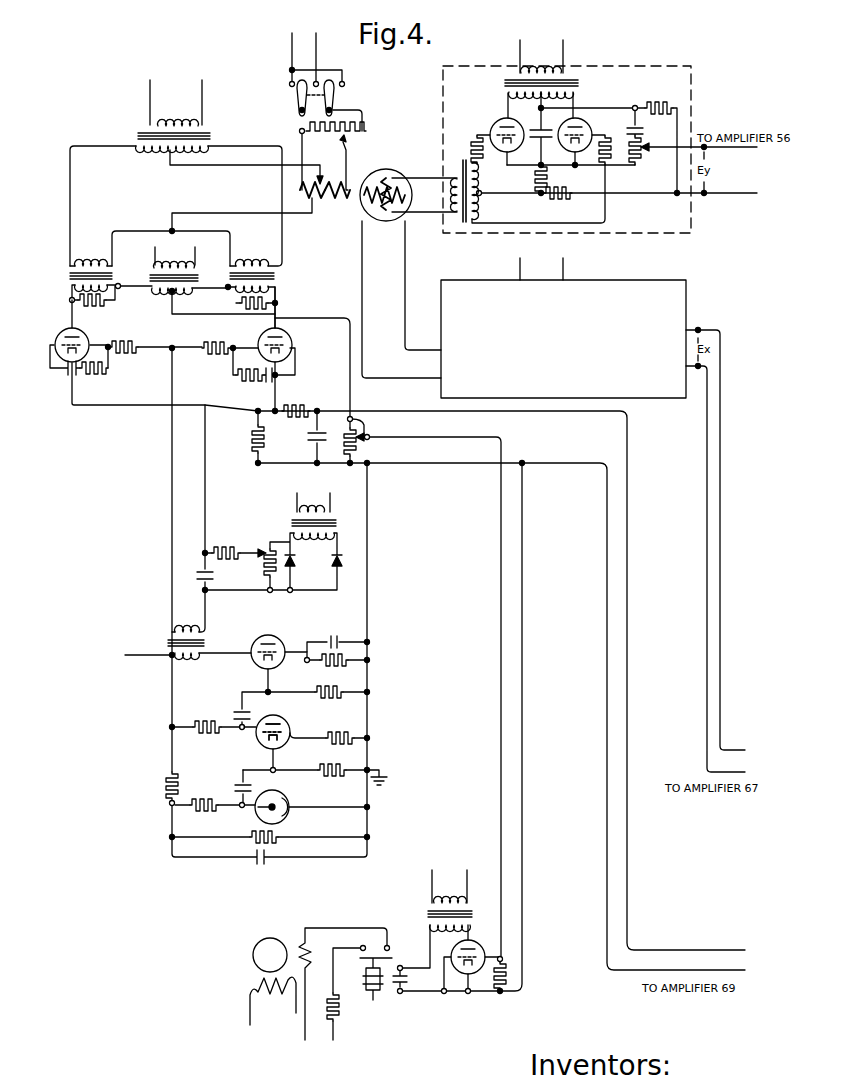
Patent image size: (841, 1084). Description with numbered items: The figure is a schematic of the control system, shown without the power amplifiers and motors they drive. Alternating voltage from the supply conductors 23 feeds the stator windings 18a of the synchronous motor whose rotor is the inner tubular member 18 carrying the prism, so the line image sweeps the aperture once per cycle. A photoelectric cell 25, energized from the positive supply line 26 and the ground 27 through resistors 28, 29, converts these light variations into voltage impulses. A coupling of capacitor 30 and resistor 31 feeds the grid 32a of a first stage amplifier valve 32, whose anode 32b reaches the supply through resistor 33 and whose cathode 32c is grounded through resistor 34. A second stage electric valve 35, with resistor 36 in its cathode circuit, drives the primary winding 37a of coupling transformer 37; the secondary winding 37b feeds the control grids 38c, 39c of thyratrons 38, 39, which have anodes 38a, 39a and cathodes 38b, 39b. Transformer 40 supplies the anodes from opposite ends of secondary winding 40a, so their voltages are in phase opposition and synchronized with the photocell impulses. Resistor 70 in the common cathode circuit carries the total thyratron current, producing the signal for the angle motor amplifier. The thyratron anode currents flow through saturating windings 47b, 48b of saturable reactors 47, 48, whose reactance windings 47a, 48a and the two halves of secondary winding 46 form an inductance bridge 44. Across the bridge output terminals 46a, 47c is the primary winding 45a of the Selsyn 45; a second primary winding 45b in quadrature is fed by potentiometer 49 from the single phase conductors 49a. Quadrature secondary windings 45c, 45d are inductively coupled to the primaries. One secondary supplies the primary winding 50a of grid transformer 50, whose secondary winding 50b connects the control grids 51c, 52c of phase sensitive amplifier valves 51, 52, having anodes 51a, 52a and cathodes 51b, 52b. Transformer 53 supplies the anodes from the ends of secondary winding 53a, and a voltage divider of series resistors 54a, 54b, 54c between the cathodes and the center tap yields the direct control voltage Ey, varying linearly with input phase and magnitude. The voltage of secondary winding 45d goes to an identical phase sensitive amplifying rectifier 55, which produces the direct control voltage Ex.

The inner tubular member 18 is at (282, 943).
The stator windings 18a is at (304, 966).
The supply conductors 23 is at (356, 156).
The photoelectric cell 25 is at (290, 817).
The positive supply line 26 is at (144, 654).
The ground 27 is at (382, 774).
The resistor 28 is at (166, 784).
The resistor 29 is at (211, 815).
The capacitor 30 is at (234, 785).
The resistor 31 is at (328, 776).
The first stage amplifier valve 32 is at (262, 744).
The grid 32a is at (294, 720).
The anode 32b is at (261, 716).
The cathode 32c is at (291, 732).
The resistor 33 is at (202, 723).
The resistor 34 is at (344, 734).
The electric valve 35 is at (258, 667).
The resistor 36 is at (332, 667).
The coupling transformer 37 is at (206, 643).
The primary winding 37a is at (186, 658).
The secondary winding 37b is at (184, 630).
The electric valve 38 is at (62, 332).
The anode 38a is at (79, 332).
The cathode 38b is at (108, 354).
The control grid 38c is at (50, 364).
The electric valve 39 is at (294, 336).
The anode 39a is at (272, 332).
The cathode 39b is at (230, 351).
The control grid 39c is at (298, 370).
The transformer 40 is at (192, 283).
The secondary winding 40a is at (180, 298).
The inductance bridge 44 is at (194, 197).
The Selsyn 45 is at (384, 165).
The primary winding 45a is at (306, 198).
The second primary winding 45b is at (342, 200).
The secondary winding 45c is at (404, 186).
The secondary winding 45d is at (382, 219).
The secondary winding 46 is at (135, 142).
The output terminal 46a is at (170, 156).
The saturable reactor 47 is at (108, 270).
The reactance winding 47a is at (92, 262).
The saturating winding 47b is at (72, 287).
The output terminal 47c is at (172, 230).
The saturable reactor 48 is at (278, 280).
The reactance winding 48a is at (256, 264).
The saturating winding 48b is at (275, 303).
The potentiometer 49 is at (358, 126).
The conductors 49a is at (316, 52).
The grid transformer 50 is at (458, 176).
The primary winding 50a is at (448, 216).
The secondary winding 50b is at (481, 212).
The electric valve 51 is at (498, 120).
The anode 51a is at (508, 109).
The cathode 51b is at (505, 157).
The control grid 51c is at (476, 132).
The electric valve 52 is at (586, 130).
The anode 52a is at (572, 122).
The cathode 52b is at (578, 164).
The control grid 52c is at (592, 135).
The transformer 53 is at (508, 82).
The secondary winding 53a is at (576, 92).
The resistor 54a is at (538, 190).
The resistor 54b is at (566, 198).
The resistor 54c is at (661, 104).
The phase sensitive amplifying rectifier 55 is at (619, 280).
The resistor 70 is at (261, 437).